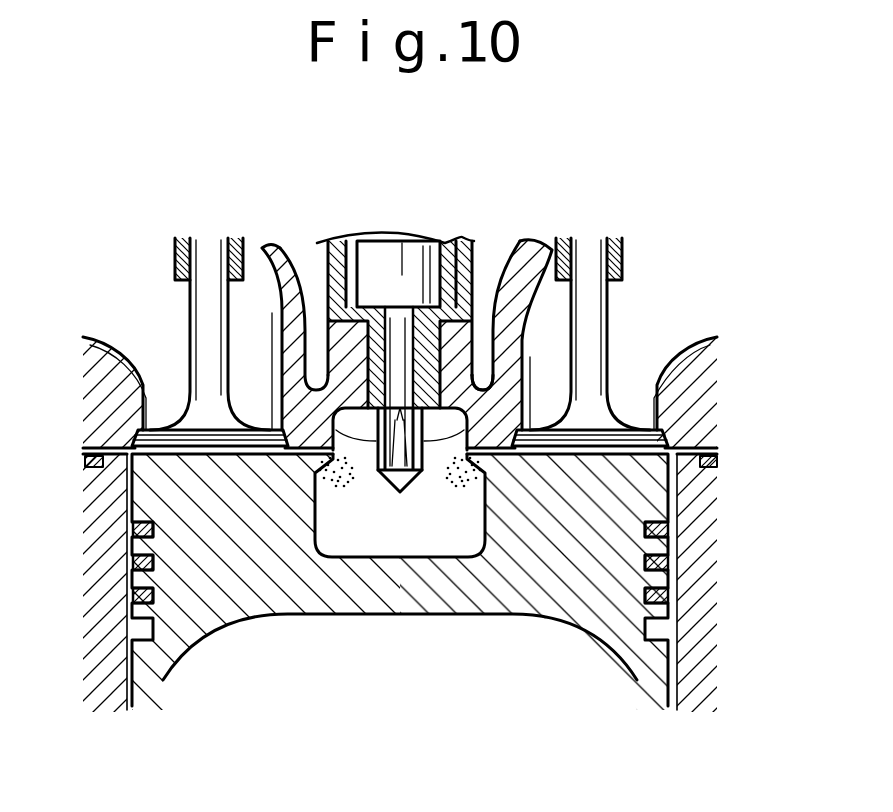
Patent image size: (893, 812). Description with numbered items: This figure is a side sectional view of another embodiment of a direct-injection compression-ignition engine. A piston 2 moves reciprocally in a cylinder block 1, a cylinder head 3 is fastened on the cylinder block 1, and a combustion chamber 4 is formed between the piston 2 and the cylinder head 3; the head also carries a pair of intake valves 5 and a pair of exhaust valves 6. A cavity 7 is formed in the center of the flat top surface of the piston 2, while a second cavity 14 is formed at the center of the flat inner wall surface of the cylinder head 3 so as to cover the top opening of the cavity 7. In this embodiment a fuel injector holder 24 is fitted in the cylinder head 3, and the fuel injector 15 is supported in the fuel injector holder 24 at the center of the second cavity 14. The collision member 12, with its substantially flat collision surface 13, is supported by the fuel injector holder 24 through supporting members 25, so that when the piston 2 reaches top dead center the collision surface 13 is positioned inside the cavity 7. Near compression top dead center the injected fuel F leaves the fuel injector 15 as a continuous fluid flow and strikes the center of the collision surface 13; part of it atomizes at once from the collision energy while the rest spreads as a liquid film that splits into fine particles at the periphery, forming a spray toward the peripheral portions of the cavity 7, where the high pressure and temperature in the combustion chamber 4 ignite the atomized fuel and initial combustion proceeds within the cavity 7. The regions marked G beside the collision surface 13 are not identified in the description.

The cylinder block 1 is at (700, 622).
The piston 2 is at (577, 605).
The cylinder head 3 is at (520, 265).
The combustion chamber 4 is at (348, 424).
The intake valves 5 is at (597, 330).
The exhaust valves 6 is at (200, 327).
The cavity 7 is at (482, 533).
The collision member 12 is at (400, 472).
The collision surface 13 is at (370, 462).
The second cavity 14 is at (500, 257).
The fuel injector 15 is at (378, 239).
The fuel injector holder 24 is at (333, 241).
The supporting members 25 is at (323, 327).
The injected fuel F is at (390, 345).
The fuel-air mixture G is at (455, 476).